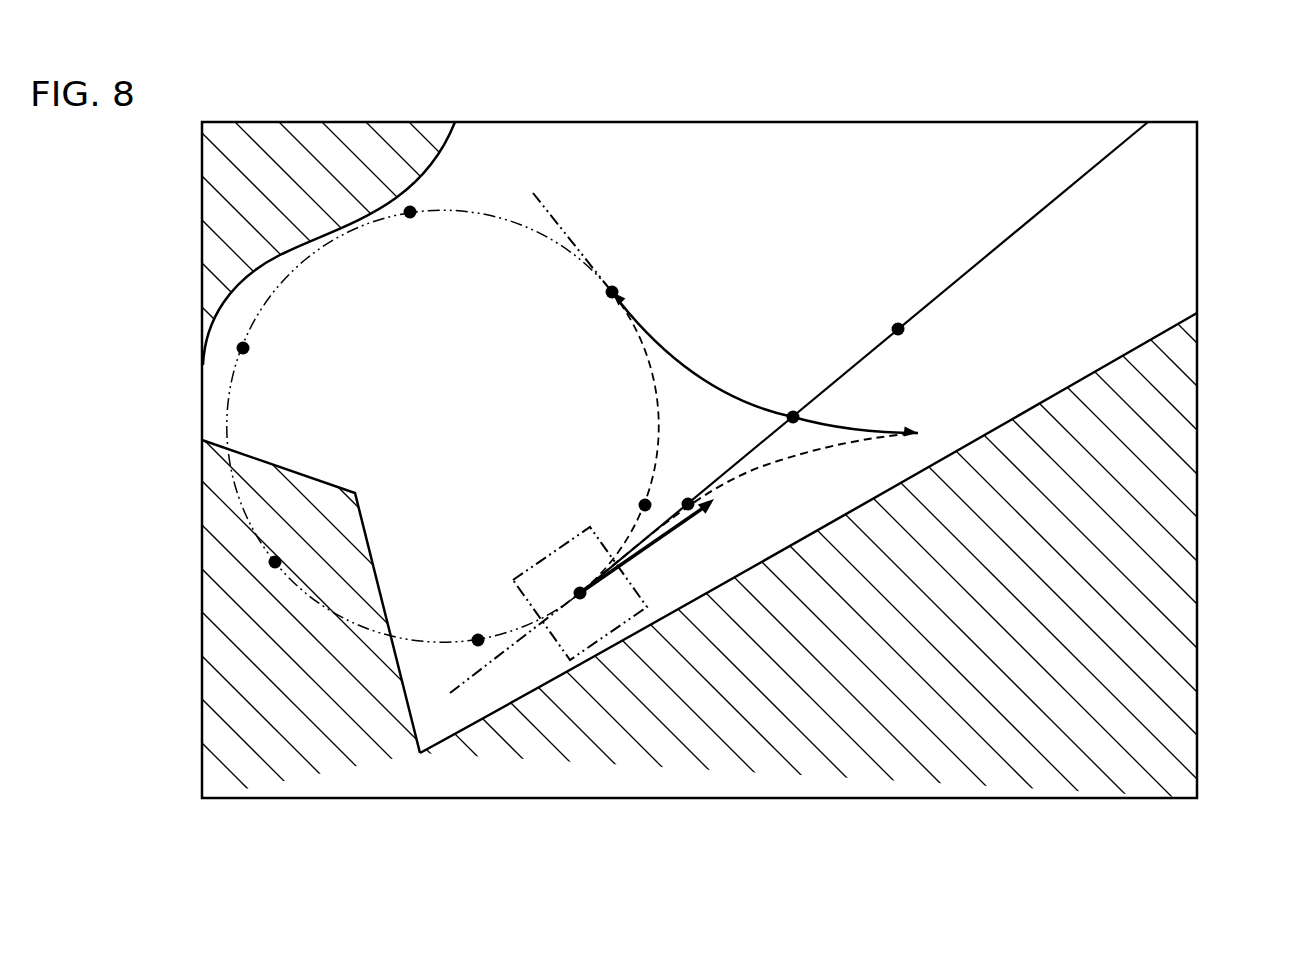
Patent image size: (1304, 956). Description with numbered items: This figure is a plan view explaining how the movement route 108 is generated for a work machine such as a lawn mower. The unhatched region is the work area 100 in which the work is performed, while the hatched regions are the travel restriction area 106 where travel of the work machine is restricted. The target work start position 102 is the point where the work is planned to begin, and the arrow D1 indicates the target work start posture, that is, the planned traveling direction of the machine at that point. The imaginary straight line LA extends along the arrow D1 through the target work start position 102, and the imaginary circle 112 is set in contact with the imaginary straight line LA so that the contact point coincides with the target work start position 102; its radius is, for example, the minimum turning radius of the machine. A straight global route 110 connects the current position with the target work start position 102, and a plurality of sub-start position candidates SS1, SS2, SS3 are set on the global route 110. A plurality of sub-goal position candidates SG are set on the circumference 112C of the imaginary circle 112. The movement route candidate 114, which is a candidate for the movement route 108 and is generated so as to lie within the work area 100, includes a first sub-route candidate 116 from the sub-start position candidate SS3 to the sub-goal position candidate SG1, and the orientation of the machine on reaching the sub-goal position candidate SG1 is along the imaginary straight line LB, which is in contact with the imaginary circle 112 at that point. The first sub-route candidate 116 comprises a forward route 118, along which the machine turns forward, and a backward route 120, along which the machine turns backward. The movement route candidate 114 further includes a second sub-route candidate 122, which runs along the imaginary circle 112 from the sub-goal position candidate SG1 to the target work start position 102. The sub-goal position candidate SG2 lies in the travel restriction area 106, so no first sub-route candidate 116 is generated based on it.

The work area 100 is at (707, 140).
The target work start position 102 is at (572, 588).
The travel restriction area 106 is at (1180, 533).
The movement route 108 is at (765, 316).
The global route 110 is at (978, 264).
The imaginary circle 112 is at (230, 406).
The circumference 112C is at (375, 448).
The movement route candidate 114 is at (765, 316).
The first sub-route candidate 116 is at (765, 359).
The forward route 118 is at (790, 323).
The backward route 120 is at (778, 462).
The second sub-route candidate 122 is at (710, 442).
The sub-goal position candidate SG is at (410, 212).
The sub-goal position candidate SG1 is at (612, 292).
The sub-goal position candidate SG2 is at (275, 562).
The sub-start position candidate SS1 is at (898, 329).
The sub-start position candidate SS2 is at (793, 417).
The sub-start position candidate SS3 is at (688, 504).
The arrow D1 is at (647, 546).
The imaginary straight line LA is at (501, 656).
The imaginary straight line LB is at (561, 233).